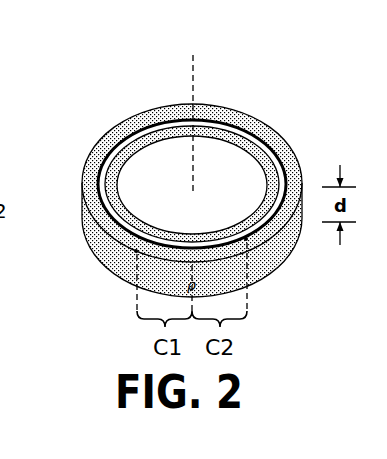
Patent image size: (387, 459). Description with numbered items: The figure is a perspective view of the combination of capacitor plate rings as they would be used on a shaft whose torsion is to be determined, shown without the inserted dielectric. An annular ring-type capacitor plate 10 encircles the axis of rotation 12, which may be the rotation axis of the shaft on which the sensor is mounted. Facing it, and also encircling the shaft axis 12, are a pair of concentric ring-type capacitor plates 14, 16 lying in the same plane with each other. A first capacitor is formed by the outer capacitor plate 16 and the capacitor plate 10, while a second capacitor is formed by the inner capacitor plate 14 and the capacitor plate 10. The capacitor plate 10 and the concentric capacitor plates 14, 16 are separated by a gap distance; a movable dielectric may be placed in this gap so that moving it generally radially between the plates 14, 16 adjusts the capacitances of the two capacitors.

The capacitor plate 10 is at (263, 265).
The axis of rotation 12 is at (193, 72).
The inner capacitor plate 14 is at (120, 223).
The outer capacitor plate 16 is at (295, 163).